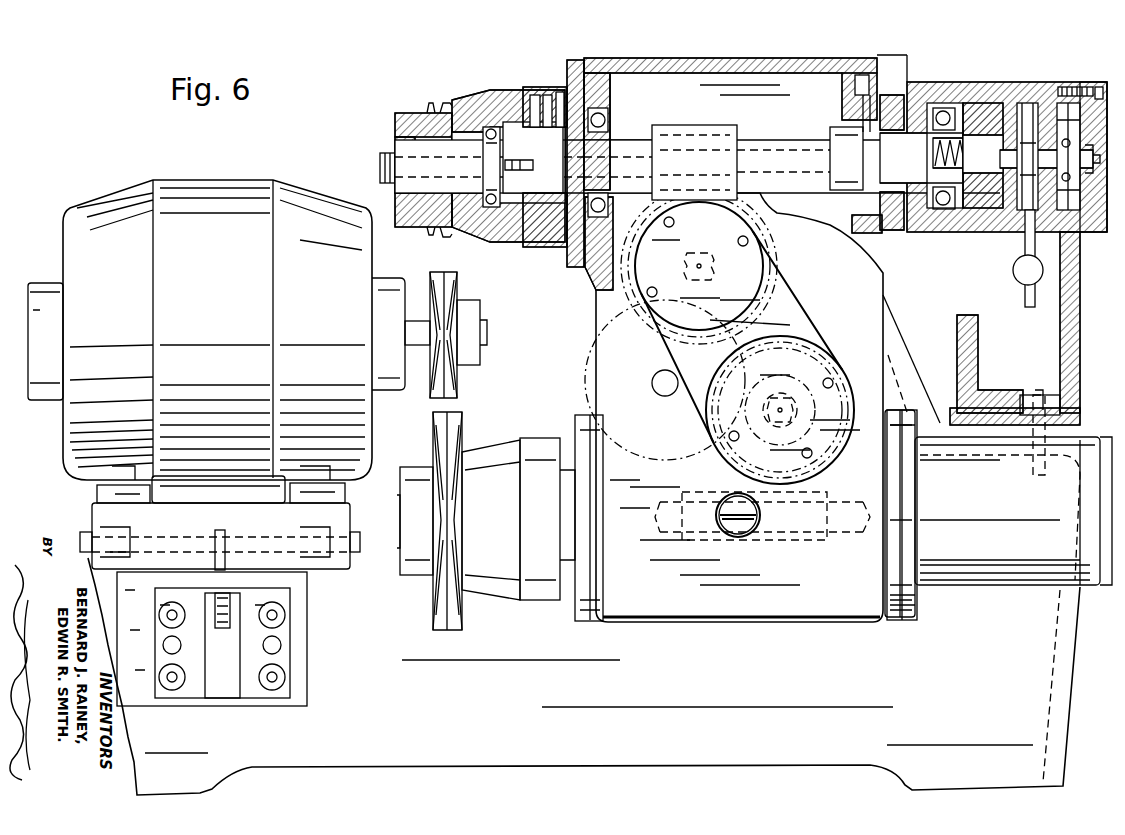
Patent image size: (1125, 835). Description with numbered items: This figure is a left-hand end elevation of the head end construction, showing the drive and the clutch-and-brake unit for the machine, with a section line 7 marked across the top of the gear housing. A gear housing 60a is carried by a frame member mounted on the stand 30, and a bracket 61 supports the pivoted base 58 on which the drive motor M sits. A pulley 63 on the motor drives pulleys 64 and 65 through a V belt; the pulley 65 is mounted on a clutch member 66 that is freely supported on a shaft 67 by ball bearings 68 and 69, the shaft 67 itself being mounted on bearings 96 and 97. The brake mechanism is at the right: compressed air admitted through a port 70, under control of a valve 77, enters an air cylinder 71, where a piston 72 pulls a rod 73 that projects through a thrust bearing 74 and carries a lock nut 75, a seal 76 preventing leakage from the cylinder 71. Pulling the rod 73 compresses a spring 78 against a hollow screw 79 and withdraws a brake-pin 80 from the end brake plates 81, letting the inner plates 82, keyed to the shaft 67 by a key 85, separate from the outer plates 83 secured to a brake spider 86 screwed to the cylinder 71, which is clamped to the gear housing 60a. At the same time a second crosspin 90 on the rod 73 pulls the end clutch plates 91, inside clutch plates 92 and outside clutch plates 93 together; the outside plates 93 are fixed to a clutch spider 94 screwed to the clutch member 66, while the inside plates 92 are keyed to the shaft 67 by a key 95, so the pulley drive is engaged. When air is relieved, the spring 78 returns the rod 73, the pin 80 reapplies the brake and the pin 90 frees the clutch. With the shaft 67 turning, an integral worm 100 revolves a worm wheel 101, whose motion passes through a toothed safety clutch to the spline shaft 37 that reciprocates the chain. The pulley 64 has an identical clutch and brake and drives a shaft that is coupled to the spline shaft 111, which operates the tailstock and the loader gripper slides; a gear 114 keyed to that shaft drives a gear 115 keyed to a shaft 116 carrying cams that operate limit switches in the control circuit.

The section line of FIG. 7 is at (678, 42).
The stand 30 is at (393, 765).
The spline shaft 37 is at (714, 270).
The pivoted base 58 is at (348, 497).
The bracket 61 is at (290, 646).
The pulley 63 is at (460, 372).
The pulley 64 is at (433, 602).
The pulley 65 is at (412, 222).
The clutch member 66 is at (470, 95).
The shaft 67 is at (382, 168).
The ball bearing 68 is at (395, 135).
The ball bearing 69 is at (478, 100).
The port 70 is at (1036, 250).
The air cylinder 71 is at (1080, 262).
The piston 72 is at (1052, 100).
The rod 73 is at (632, 150).
The thrust bearing 74 is at (1092, 87).
The lock nut 75 is at (1095, 233).
The seal 76 is at (1007, 103).
The valve 77 is at (1013, 278).
The spring 78 is at (975, 233).
The hollow screw 79 is at (1000, 233).
The brake-pin 80 is at (915, 232).
The end brake plates 81 is at (842, 118).
The inner plates 82 is at (896, 95).
The outer plates 83 is at (868, 78).
The key 85 is at (940, 108).
The brake spider 86 is at (850, 222).
The crosspin 90 is at (508, 172).
The end clutch plates 91 is at (528, 92).
The inside clutch plates 92 is at (535, 95).
The outside clutch plates 93 is at (547, 95).
The clutch spider 94 is at (560, 92).
The key 95 is at (491, 125).
The bearing 96 is at (606, 122).
The bearing 97 is at (955, 108).
The worm 100 is at (670, 125).
The worm wheel 101 is at (768, 243).
The spline shaft 111 is at (797, 405).
The gear 114 is at (760, 380).
The gear 115 is at (588, 372).
The shaft 116 is at (660, 370).
The gear housing 60a is at (722, 58).